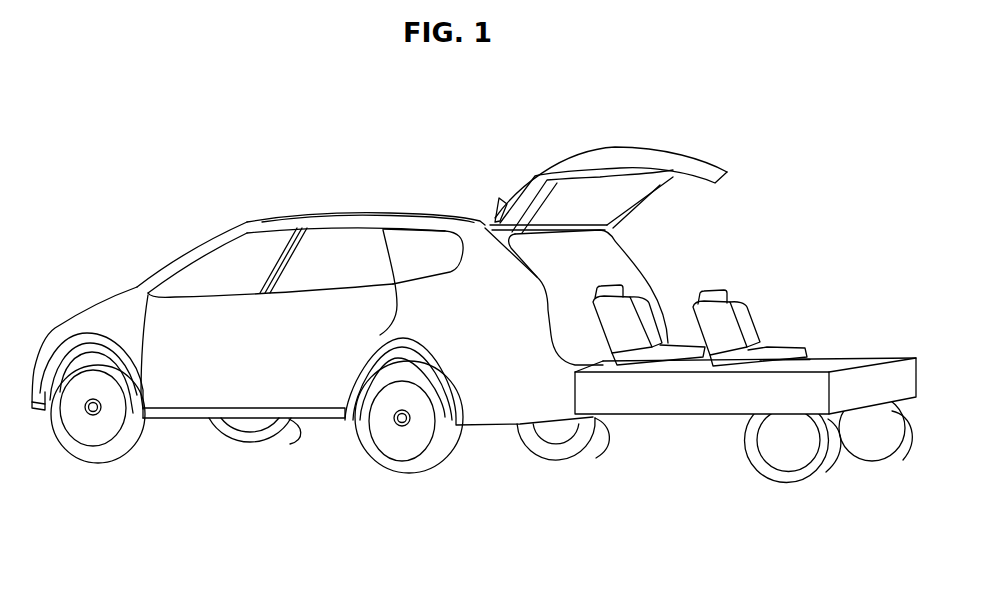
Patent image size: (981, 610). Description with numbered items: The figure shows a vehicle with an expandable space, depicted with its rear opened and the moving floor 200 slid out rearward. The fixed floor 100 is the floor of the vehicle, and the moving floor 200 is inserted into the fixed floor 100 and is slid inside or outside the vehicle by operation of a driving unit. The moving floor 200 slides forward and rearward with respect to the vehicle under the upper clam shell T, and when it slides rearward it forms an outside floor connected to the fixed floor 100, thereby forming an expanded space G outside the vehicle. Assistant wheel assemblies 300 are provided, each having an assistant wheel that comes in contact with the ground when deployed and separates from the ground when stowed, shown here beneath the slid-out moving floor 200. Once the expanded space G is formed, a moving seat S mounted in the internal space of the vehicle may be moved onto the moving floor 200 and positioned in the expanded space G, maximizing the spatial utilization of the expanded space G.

The fixed floor 100 is at (579, 344).
The moving floor 200 is at (667, 403).
The assistant wheel assemblies 300 is at (762, 483).
The upper clam shell T is at (658, 156).
The moving seat S is at (748, 322).
The expanded space G is at (773, 333).